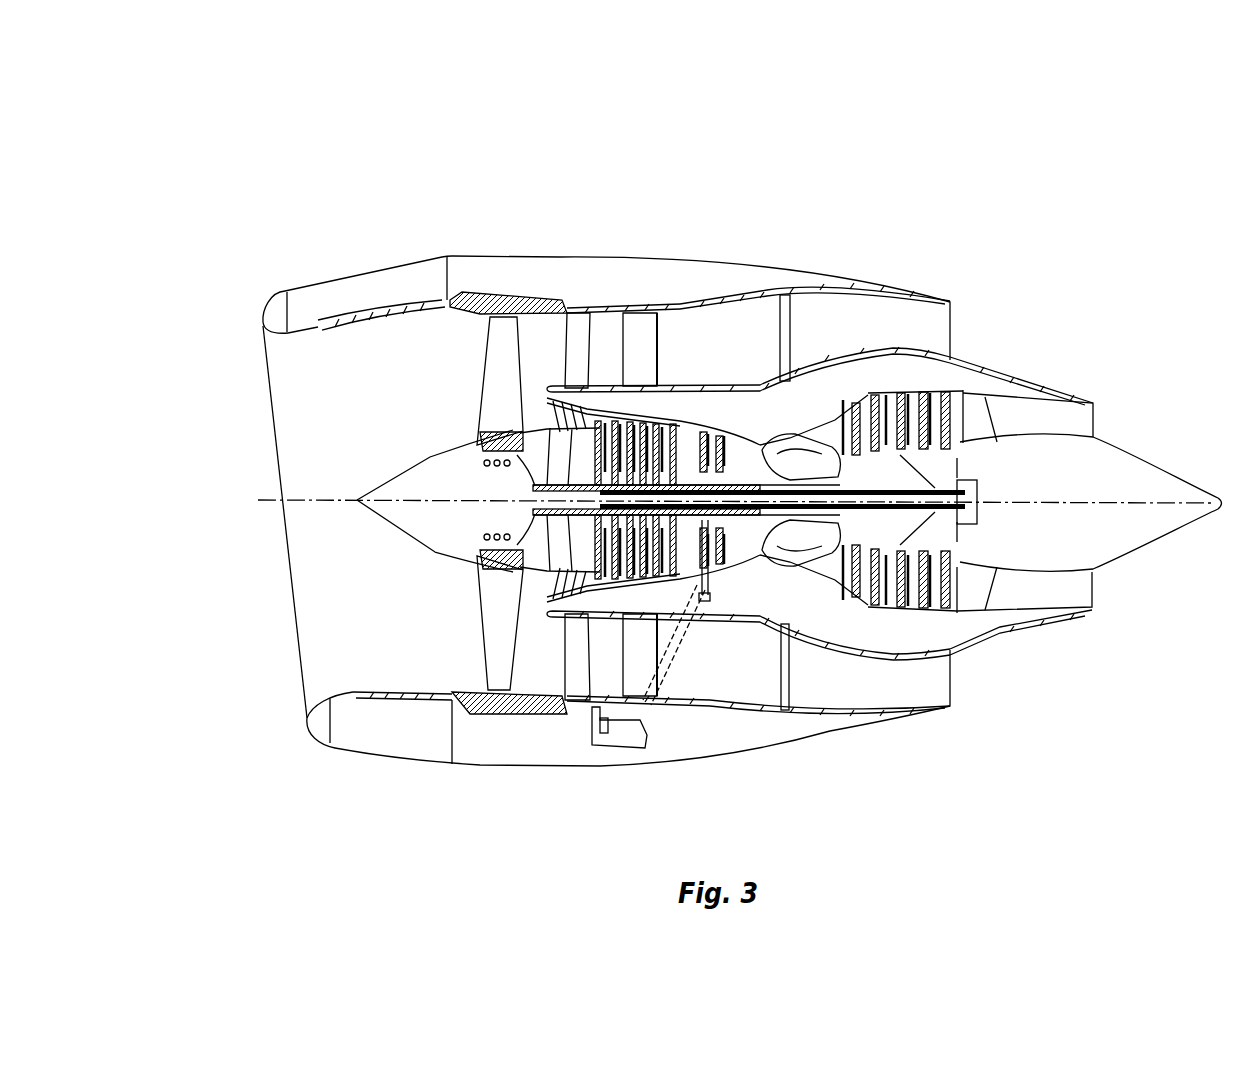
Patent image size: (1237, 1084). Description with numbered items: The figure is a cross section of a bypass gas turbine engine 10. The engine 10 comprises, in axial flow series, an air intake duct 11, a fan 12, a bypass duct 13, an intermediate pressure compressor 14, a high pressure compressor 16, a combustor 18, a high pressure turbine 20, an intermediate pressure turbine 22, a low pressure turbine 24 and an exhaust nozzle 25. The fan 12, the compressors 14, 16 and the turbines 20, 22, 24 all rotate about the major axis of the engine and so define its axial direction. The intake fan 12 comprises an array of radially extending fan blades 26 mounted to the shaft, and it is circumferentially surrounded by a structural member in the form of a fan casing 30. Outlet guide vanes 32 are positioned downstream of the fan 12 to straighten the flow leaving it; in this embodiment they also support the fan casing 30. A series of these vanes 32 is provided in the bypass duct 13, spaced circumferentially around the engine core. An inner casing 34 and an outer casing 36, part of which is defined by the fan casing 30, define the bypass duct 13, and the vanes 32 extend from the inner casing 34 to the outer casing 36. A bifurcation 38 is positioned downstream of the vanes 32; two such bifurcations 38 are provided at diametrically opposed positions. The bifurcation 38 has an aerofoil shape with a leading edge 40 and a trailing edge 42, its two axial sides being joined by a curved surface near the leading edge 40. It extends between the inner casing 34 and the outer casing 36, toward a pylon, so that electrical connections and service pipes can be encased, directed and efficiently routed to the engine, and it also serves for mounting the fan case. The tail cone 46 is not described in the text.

The bypass gas turbine engine 10 is at (1027, 220).
The air intake duct 11 is at (293, 637).
The fan 12 is at (505, 643).
The bypass duct 13 is at (895, 336).
The intermediate pressure compressor 14 is at (630, 593).
The high pressure compressor 16 is at (750, 567).
The combustor 18 is at (787, 560).
The high pressure turbine 20 is at (824, 560).
The intermediate pressure turbine 22 is at (868, 590).
The low pressure turbine 24 is at (937, 583).
The exhaust nozzle 25 is at (1082, 430).
The fan blades 26 is at (524, 419).
The fan casing 30 is at (534, 313).
The outlet guide vanes 32 is at (582, 338).
The inner casing 34 is at (631, 298).
The outer casing 36 is at (883, 283).
The bifurcation 38 is at (751, 374).
The leading edge 40 is at (659, 338).
The trailing edge 42 is at (781, 328).
The tail cone 46 is at (1123, 504).